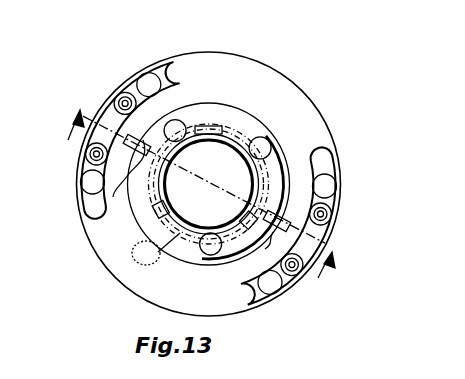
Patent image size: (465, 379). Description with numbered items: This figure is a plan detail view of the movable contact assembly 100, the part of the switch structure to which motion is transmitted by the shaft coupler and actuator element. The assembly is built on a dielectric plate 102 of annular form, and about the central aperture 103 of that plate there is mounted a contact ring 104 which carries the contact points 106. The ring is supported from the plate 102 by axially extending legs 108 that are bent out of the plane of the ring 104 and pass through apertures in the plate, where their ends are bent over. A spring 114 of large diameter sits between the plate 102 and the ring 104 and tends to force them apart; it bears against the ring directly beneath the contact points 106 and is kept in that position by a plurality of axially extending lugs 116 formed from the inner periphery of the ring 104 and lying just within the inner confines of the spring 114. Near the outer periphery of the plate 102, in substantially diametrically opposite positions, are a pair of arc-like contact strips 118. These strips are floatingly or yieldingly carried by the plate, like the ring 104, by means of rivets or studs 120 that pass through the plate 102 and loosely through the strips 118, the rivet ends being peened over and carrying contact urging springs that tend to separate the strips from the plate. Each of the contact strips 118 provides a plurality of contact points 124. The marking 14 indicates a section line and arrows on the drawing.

The movable contact assembly 100 is at (212, 180).
The dielectric plate 102 is at (258, 72).
The central aperture 103 is at (188, 167).
The contact ring 104 is at (280, 168).
The contact points 106 is at (176, 120).
The axially extending legs 108 is at (194, 201).
The spring 114 is at (156, 249).
The axially extending lugs 116 is at (210, 135).
The arc-like contact strips 118 is at (112, 110).
The rivets or studs 120 is at (121, 99).
The contact points 124 is at (149, 81).
The section line 14- 14 is at (343, 90).